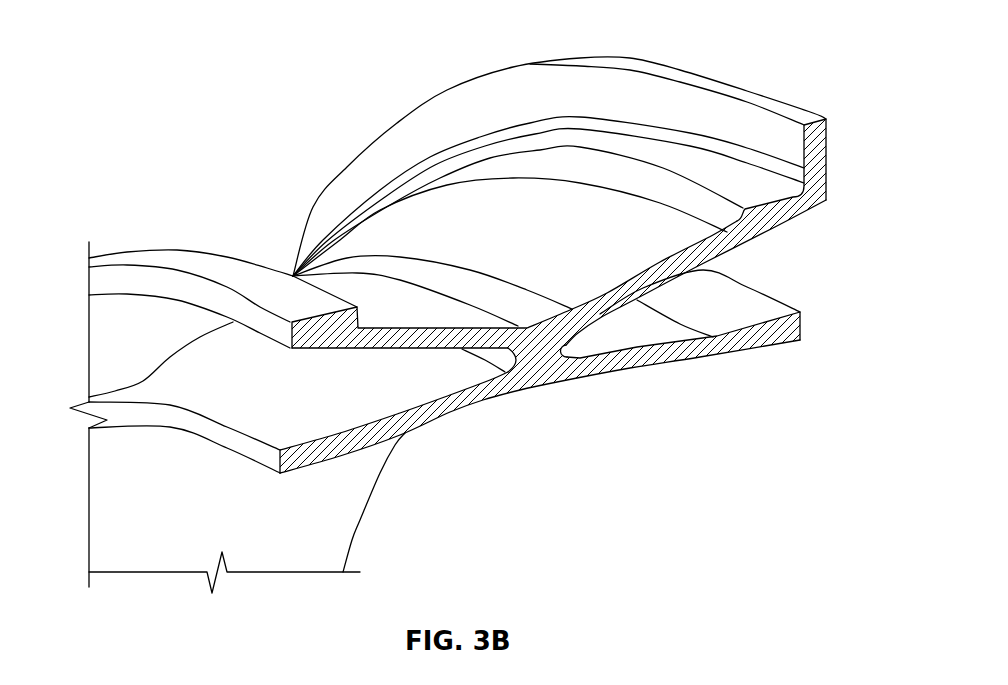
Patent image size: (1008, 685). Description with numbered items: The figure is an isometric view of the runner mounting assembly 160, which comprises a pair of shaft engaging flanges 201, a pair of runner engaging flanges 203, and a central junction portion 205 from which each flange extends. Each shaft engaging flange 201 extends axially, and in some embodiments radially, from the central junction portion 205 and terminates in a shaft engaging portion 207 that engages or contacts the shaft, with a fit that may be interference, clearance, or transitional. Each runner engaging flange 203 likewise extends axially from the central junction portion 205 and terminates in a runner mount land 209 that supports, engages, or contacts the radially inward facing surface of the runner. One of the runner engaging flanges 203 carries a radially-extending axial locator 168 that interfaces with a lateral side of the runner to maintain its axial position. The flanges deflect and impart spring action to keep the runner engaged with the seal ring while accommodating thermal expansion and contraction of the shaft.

The runner mounting assembly 160 is at (163, 40).
The axial locator 168 is at (818, 152).
The shaft engaging flange 201 is at (483, 400).
The runner engaging flange 203 is at (720, 253).
The central junction portion 205 is at (540, 362).
The shaft engaging portion 207 is at (765, 348).
The runner mount land 209 is at (210, 267).